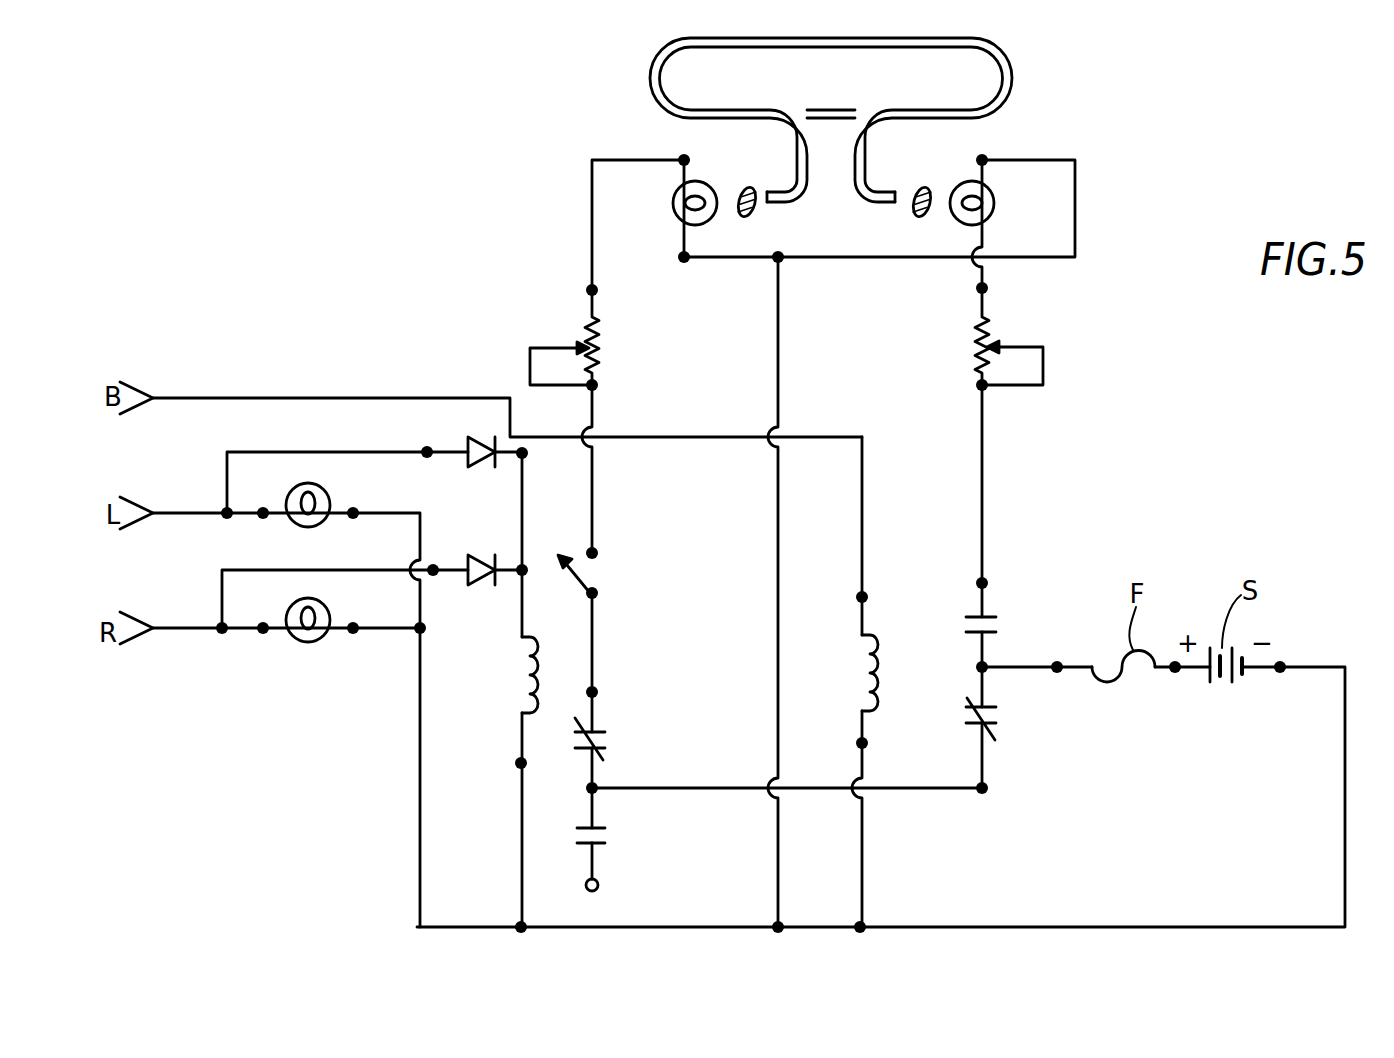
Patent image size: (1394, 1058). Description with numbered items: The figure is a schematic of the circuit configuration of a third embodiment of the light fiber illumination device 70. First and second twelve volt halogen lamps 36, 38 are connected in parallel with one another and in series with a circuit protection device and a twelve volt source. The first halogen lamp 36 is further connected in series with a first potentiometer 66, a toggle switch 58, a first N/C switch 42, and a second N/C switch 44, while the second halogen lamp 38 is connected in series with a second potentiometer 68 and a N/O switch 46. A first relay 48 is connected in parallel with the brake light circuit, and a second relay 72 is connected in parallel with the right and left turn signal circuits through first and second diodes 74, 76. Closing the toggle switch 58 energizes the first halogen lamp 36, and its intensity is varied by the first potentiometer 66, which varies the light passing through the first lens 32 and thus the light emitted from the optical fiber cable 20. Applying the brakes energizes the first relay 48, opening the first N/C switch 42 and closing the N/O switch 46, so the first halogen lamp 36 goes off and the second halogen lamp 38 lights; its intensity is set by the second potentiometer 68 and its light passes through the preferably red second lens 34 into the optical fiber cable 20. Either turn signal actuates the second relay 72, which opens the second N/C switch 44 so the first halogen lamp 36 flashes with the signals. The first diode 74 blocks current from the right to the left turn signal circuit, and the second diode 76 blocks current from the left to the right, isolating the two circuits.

The optical fiber cable 20 is at (650, 87).
The first lens 32 is at (748, 214).
The second lens 34 is at (925, 218).
The first halogen lamp 36 is at (708, 182).
The second halogen lamp 38 is at (963, 183).
The first N/C switch 42 is at (610, 738).
The second N/C switch 44 is at (1001, 718).
The N/O switch 46 is at (993, 627).
The first relay 48 is at (874, 640).
The toggle switch 58 is at (580, 570).
The first potentiometer 66 is at (600, 350).
The second potentiometer 68 is at (975, 332).
The light fiber illumination device 70 is at (398, 291).
The second relay 72 is at (521, 660).
The first diode 74 is at (467, 445).
The second diode 76 is at (473, 556).